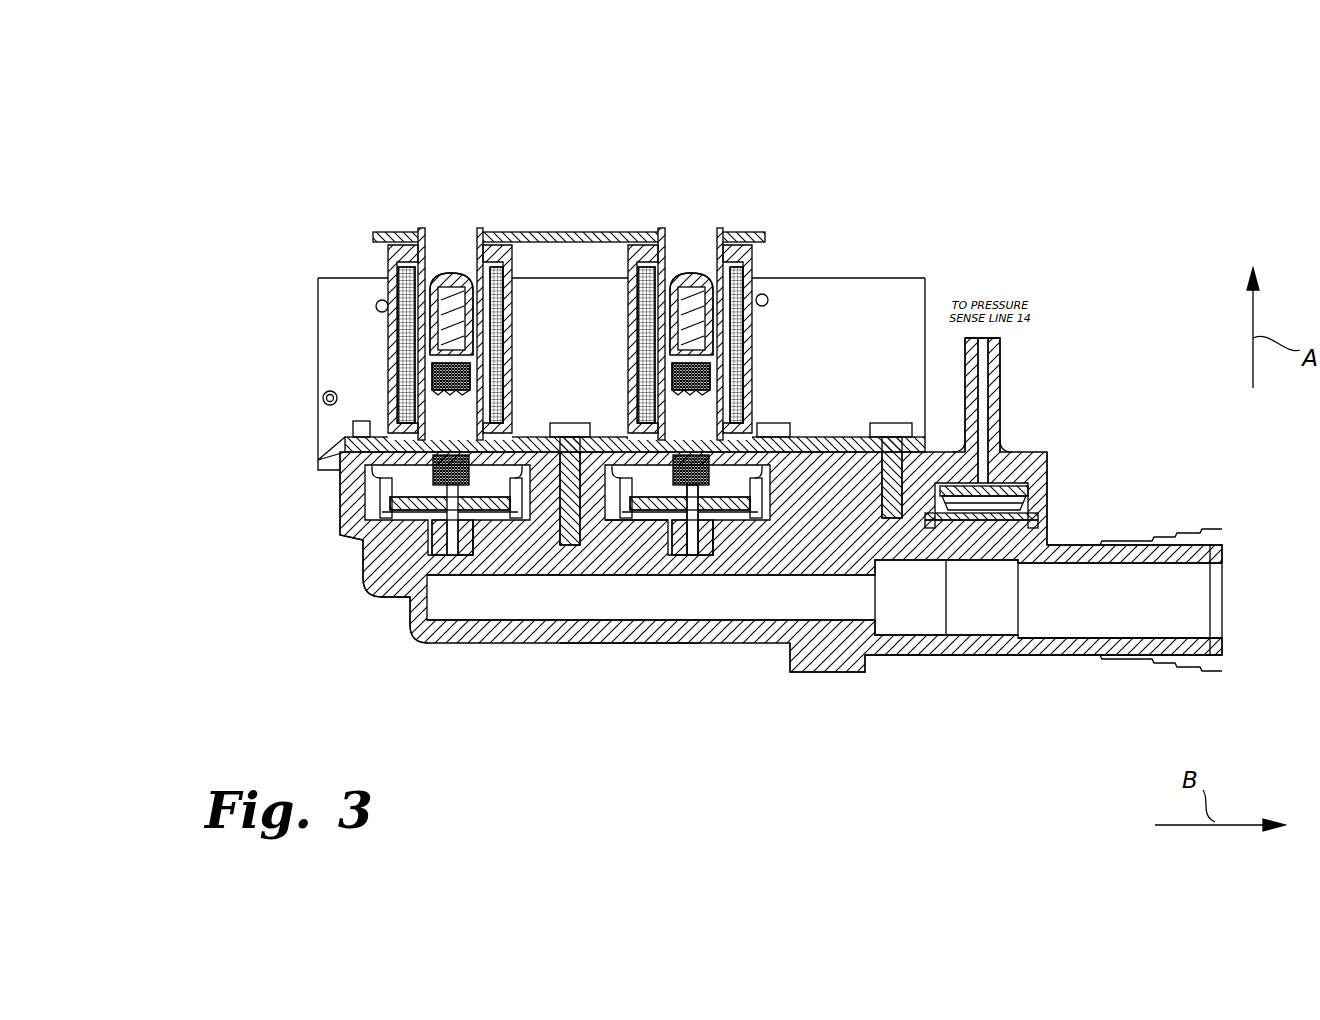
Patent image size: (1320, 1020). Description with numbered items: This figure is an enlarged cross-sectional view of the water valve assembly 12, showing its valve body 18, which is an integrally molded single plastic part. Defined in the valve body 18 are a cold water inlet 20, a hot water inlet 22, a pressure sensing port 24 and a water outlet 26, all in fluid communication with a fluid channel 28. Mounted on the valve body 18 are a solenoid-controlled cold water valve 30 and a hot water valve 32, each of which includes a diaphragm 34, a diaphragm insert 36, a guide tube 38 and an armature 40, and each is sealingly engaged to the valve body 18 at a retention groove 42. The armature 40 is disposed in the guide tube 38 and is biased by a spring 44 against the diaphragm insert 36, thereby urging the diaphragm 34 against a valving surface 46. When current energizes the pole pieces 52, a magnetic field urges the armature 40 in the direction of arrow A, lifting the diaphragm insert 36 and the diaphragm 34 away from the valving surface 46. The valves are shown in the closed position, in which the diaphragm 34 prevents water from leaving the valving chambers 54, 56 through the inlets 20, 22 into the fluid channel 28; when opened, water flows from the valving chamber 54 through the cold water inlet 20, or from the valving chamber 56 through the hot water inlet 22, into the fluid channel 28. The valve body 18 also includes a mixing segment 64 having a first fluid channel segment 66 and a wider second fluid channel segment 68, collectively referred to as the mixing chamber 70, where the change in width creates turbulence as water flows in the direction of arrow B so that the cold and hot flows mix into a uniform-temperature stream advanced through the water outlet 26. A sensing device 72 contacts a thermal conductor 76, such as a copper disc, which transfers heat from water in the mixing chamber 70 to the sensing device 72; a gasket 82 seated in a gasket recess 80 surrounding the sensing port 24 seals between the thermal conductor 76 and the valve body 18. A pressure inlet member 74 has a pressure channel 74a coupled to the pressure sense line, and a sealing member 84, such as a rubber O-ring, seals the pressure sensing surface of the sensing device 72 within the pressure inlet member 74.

The water valve assembly 12 is at (1172, 226).
The valve body 18 is at (550, 635).
The cold water inlet 20 is at (380, 593).
The hot water inlet 22 is at (690, 620).
The pressure sensing port 24 is at (1045, 515).
The water outlet 26 is at (1135, 655).
The fluid channel 28 is at (598, 620).
The cold water valve 30 is at (418, 225).
The hot water valve 32 is at (655, 228).
The diaphragm 34 is at (345, 520).
The diaphragm insert 36 is at (362, 545).
The guide tube 38 is at (617, 440).
The armature 40 is at (500, 346).
The retention groove 42 is at (450, 608).
The spring 44 is at (508, 298).
The valving surface 46 is at (425, 600).
The pole pieces 52 is at (395, 350).
The valving chamber 54 is at (470, 630).
The valving chamber 56 is at (698, 555).
The mixing segment 64 is at (868, 680).
The first fluid channel segment 66 is at (830, 672).
The second fluid channel segment 68 is at (1020, 658).
The mixing chamber 70 is at (1035, 628).
The sensing device 72 is at (1000, 452).
The pressure inlet member 74 is at (1041, 401).
The pressure channel 74a is at (1000, 340).
The thermal conductor 76 is at (1047, 500).
The gasket recess 80 is at (1040, 572).
The gasket 82 is at (1045, 512).
The sealing member 84 is at (1047, 470).